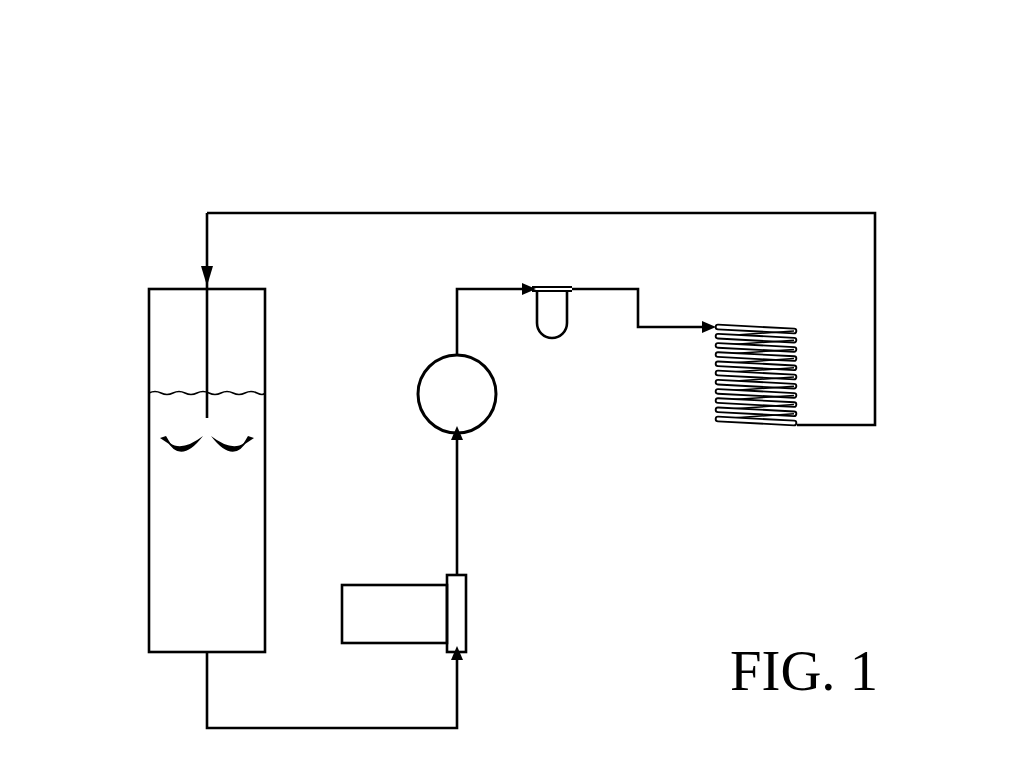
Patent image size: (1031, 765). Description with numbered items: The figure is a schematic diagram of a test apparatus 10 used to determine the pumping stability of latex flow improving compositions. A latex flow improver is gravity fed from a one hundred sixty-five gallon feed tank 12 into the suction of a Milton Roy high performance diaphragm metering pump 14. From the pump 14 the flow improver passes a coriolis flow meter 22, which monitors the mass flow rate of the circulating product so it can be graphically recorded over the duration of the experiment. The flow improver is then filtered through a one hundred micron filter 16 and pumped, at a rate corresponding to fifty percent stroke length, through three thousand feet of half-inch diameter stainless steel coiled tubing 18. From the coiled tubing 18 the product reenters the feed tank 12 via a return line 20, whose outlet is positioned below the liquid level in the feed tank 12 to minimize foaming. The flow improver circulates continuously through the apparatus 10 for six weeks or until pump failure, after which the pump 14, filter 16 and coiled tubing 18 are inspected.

The test apparatus 10 is at (895, 100).
The feed tank 12 is at (149, 318).
The metering pump 14 is at (387, 585).
The filter 16 is at (565, 287).
The coiled tubing 18 is at (787, 313).
The return line 20 is at (207, 236).
The coriolis flow meter 22 is at (424, 368).